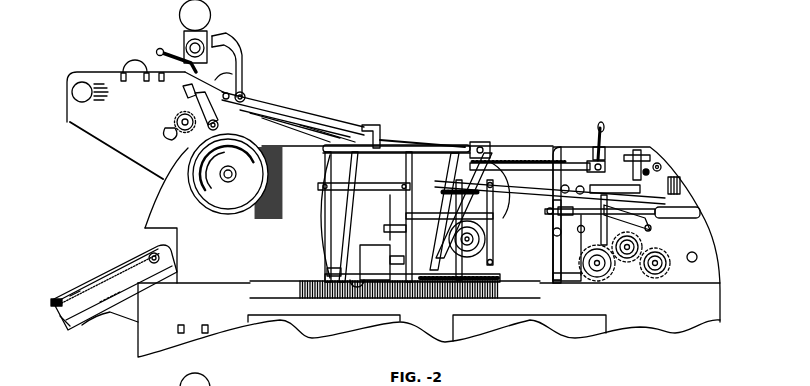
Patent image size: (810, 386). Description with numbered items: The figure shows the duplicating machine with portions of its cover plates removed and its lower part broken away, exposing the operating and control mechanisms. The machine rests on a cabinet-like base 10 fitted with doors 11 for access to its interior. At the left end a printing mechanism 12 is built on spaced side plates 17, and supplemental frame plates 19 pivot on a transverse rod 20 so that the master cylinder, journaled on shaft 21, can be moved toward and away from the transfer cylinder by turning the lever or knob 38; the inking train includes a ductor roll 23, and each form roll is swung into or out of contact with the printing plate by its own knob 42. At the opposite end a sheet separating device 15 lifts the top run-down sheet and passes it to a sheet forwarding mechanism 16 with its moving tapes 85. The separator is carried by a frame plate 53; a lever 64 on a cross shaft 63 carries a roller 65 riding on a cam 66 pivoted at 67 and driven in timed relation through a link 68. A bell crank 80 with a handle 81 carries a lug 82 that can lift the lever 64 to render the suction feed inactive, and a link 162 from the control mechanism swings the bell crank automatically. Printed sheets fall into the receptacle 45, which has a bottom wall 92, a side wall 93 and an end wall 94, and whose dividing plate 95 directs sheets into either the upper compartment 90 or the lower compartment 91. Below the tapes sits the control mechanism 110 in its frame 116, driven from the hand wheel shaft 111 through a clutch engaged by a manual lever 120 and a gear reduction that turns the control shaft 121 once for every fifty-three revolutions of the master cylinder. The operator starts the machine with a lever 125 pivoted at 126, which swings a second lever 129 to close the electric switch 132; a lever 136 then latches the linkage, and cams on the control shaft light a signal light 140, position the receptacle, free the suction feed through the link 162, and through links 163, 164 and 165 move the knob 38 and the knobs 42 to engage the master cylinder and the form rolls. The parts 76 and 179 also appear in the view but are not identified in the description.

The cabinet-like frame or base 10 is at (140, 344).
The doors 11 is at (307, 330).
The printing mechanism 12 is at (147, 207).
The sheet separating device 15 is at (674, 163).
The sheet forwarding mechanism 16 is at (528, 167).
The side plates or frames 17 is at (146, 227).
The supplemental side frame members or plates 19 is at (89, 128).
The transverse rod 20 is at (211, 193).
The master cylinder shaft 21 is at (126, 69).
The ductor roll 23 is at (222, 62).
The lever or knob 38 is at (258, 101).
The lever or knob 42 is at (183, 88).
The discharge receptacle 45 is at (95, 270).
The separator frame plate 53 is at (697, 207).
The cross shaft 63 is at (655, 166).
The lever 64 is at (645, 168).
The roller 65 is at (663, 174).
The cam 66 is at (674, 186).
The pivot 67 is at (653, 228).
The link 68 is at (505, 208).
The stops 76 is at (175, 328).
The bell crank 80 is at (595, 158).
The operating handle or knob 81 is at (600, 128).
The lug 82 is at (630, 165).
The moving tapes 85 is at (498, 230).
The upper sheet receiving compartment 90 is at (115, 272).
The lower sheet receiving compartment 91 is at (64, 317).
The bottom wall 92 is at (84, 327).
The side wall 93 is at (96, 301).
The end wall 94 is at (53, 306).
The dividing plate 95 is at (73, 295).
The control mechanism 110 is at (346, 231).
The hand wheel shaft 111 is at (229, 183).
The control frame 116 is at (323, 189).
The manually operable lever 120 is at (392, 213).
The control shaft 121 is at (470, 241).
The lever 125 is at (370, 124).
The pivot 126 is at (342, 292).
The second lever 129 is at (413, 147).
The electric switch 132 is at (378, 290).
The lever 136 is at (476, 150).
The signal light 140 is at (478, 147).
The link 162 is at (543, 160).
The link 163 is at (333, 120).
The link 164 is at (309, 118).
The link 165 is at (340, 115).
The hook 179 is at (222, 80).